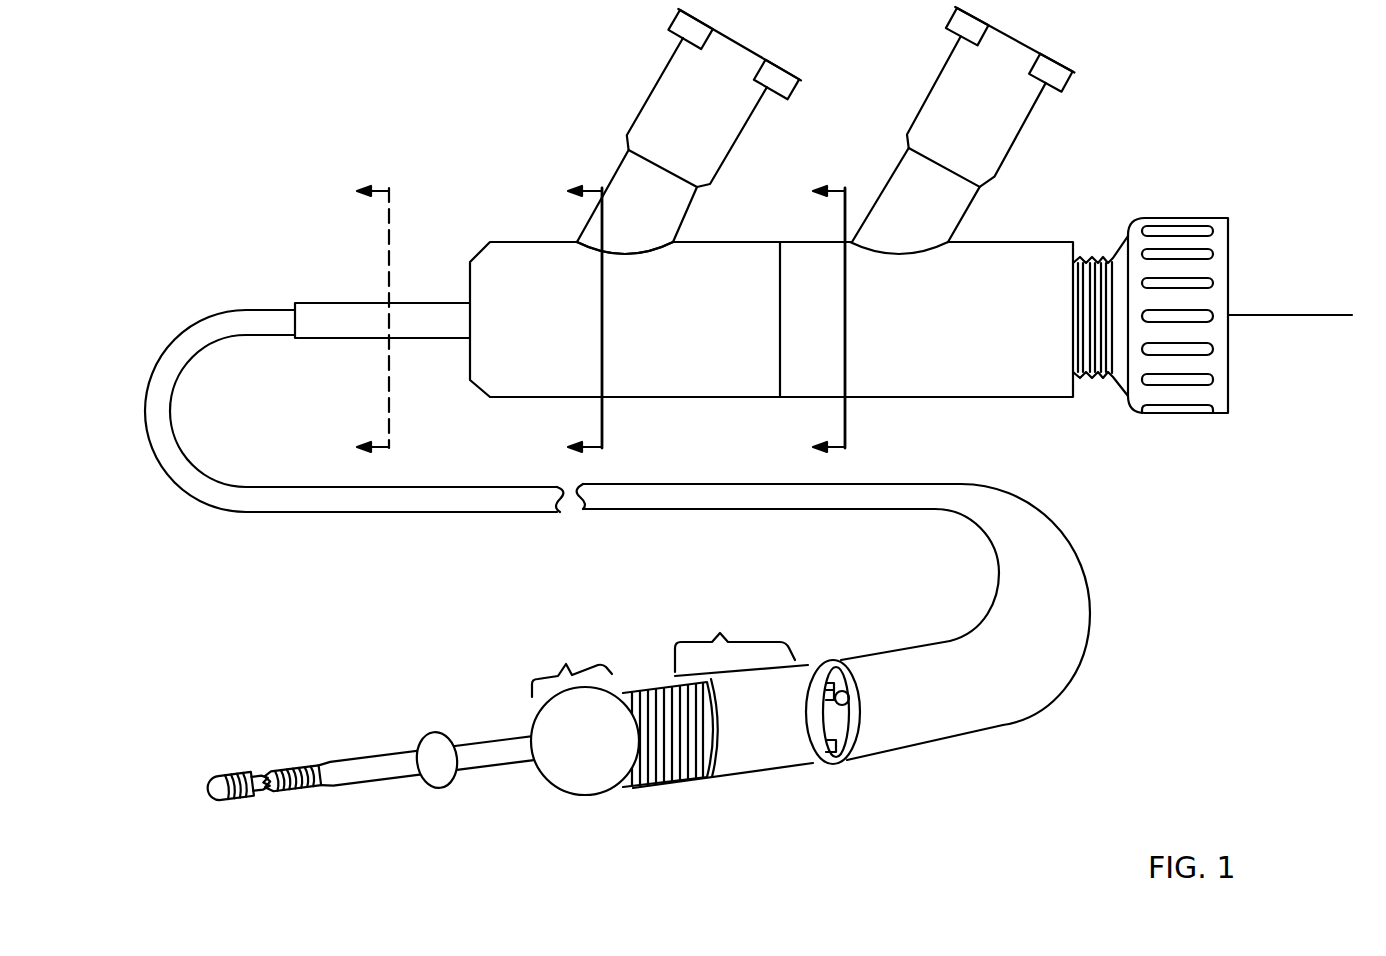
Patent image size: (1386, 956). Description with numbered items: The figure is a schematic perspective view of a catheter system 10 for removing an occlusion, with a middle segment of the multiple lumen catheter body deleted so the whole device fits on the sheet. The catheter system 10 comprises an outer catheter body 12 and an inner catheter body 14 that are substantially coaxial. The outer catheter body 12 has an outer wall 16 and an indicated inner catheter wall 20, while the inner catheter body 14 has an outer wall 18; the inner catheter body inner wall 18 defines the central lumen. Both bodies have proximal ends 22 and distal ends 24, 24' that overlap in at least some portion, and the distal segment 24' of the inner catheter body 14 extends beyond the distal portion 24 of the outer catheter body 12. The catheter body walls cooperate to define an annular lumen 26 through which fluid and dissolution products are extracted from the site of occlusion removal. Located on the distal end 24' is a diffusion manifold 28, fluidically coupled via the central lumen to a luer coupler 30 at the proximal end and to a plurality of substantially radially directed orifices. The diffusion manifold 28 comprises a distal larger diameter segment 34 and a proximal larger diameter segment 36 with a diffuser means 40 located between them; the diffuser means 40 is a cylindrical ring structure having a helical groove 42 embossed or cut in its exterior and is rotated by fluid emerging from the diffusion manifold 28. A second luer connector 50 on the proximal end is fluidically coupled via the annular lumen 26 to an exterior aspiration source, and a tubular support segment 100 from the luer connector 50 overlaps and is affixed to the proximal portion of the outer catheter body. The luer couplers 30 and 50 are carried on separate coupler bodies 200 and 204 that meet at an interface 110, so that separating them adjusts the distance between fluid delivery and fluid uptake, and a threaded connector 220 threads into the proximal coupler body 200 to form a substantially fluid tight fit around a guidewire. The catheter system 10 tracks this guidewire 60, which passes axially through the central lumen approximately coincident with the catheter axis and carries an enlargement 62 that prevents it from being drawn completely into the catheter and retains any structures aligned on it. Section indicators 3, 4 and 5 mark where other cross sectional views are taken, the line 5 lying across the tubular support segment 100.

The catheter system 10 is at (1200, 116).
The outer catheter body 12 is at (1052, 630).
The inner catheter body 14 is at (830, 693).
The outer wall of outer catheter body 16 is at (970, 733).
The outer wall of inner catheter body 18 is at (832, 756).
The inner catheter wall 20 is at (845, 692).
The proximal end of outer catheter body 22 is at (423, 352).
The distal end of outer catheter body 24 is at (965, 785).
The distal end of inner catheter body 24' is at (789, 826).
The annular lumen 26 is at (820, 677).
The diffusion manifold 28 is at (592, 770).
The luer coupler 30 is at (923, 103).
The distal larger diameter segment 34 is at (572, 666).
The proximal larger diameter segment 36 is at (723, 696).
The diffuser means 40 is at (658, 767).
The helical groove 42 is at (655, 700).
The second luer connector 50 is at (660, 125).
The guidewire 60 is at (1263, 313).
The enlargement 62 is at (432, 728).
The tubular support segment 100 is at (410, 300).
The interface 110 is at (780, 317).
The proximal coupler body 200 is at (1002, 357).
The coupler body 204 is at (683, 277).
The threaded connector 220 is at (1203, 393).
The section line 3 is at (817, 324).
The section line 4 is at (569, 324).
The section line 5— 5 is at (355, 327).